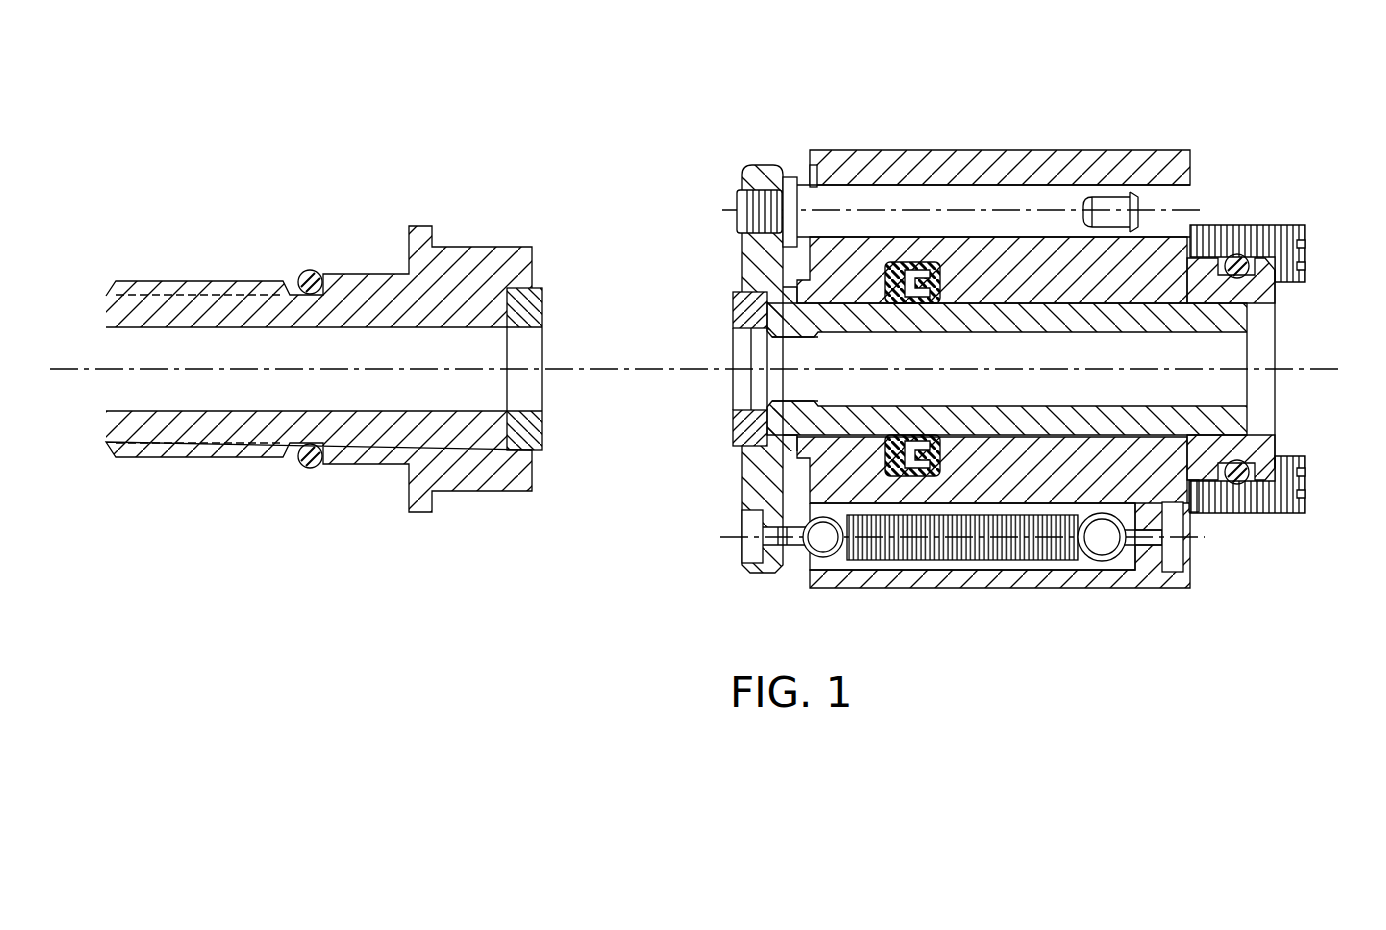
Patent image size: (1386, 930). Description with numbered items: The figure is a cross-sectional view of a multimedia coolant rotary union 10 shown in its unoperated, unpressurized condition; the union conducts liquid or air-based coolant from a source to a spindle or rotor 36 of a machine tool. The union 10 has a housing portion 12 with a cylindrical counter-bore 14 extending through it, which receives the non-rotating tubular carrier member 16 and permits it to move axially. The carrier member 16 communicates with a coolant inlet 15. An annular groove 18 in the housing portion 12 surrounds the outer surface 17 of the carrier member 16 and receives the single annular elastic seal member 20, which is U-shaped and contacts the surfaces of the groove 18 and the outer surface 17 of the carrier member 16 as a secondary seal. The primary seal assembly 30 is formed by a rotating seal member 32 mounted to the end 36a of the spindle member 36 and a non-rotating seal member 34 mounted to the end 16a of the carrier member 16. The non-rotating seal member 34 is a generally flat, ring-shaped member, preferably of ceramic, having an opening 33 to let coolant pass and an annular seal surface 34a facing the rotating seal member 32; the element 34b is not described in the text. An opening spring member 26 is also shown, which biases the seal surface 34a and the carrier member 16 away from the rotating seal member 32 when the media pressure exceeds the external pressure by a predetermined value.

The rotary union 10 is at (1015, 343).
The housing portion 12 is at (1110, 165).
The cylindrical counter-bore 14 is at (1268, 417).
The coolant inlet 15 is at (1263, 353).
The tubular carrier member 16 is at (1215, 320).
The end of carrier member 16a is at (738, 210).
The outer surface of carrier member 17 is at (1186, 272).
The annular groove 18 is at (948, 288).
The elastic seal member 20 is at (915, 262).
The opening spring member 26 is at (968, 548).
The primary seal assembly 30 is at (462, 358).
The rotating seal member 32 is at (525, 310).
The opening 33 is at (525, 350).
The non-rotating seal member 34 is at (748, 433).
The annular seal surface 34a is at (745, 300).
The tube 34b is at (733, 345).
The spindle or rotor 36 is at (372, 300).
The end of spindle member 36a is at (538, 268).